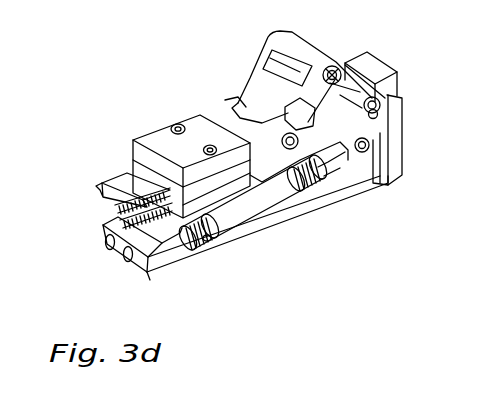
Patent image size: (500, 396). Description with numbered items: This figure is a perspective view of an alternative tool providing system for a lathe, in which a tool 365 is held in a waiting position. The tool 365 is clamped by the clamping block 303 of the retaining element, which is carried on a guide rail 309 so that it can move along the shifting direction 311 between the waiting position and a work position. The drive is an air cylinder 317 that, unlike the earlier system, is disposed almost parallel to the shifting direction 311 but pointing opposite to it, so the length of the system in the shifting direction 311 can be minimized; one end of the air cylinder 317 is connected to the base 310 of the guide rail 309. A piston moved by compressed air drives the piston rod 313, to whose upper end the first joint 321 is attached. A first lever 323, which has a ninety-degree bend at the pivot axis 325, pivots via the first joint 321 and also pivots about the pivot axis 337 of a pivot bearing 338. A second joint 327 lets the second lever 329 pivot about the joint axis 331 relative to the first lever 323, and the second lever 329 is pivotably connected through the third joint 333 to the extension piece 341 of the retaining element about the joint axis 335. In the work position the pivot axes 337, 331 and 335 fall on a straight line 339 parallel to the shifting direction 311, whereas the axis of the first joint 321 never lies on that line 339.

The clamping block 303 is at (152, 139).
The guide rail 309 is at (103, 227).
The base 310 is at (167, 245).
The shifting direction 311 is at (188, 283).
The piston rod 313 is at (325, 180).
The air cylinder 317 is at (248, 217).
The first joint 321 is at (362, 152).
The first lever 323 is at (355, 92).
The joint axis 325 is at (398, 177).
The second joint 327 is at (337, 66).
The second lever 329 is at (262, 93).
The joint axis 331 is at (228, 13).
The third joint 333 is at (298, 130).
The joint axis 335 is at (227, 102).
The pivot axis 337 is at (380, 112).
The pivot bearing 338 is at (377, 116).
The straight line 339 is at (457, 70).
The extension piece 341 is at (217, 112).
The tool 365 is at (127, 177).